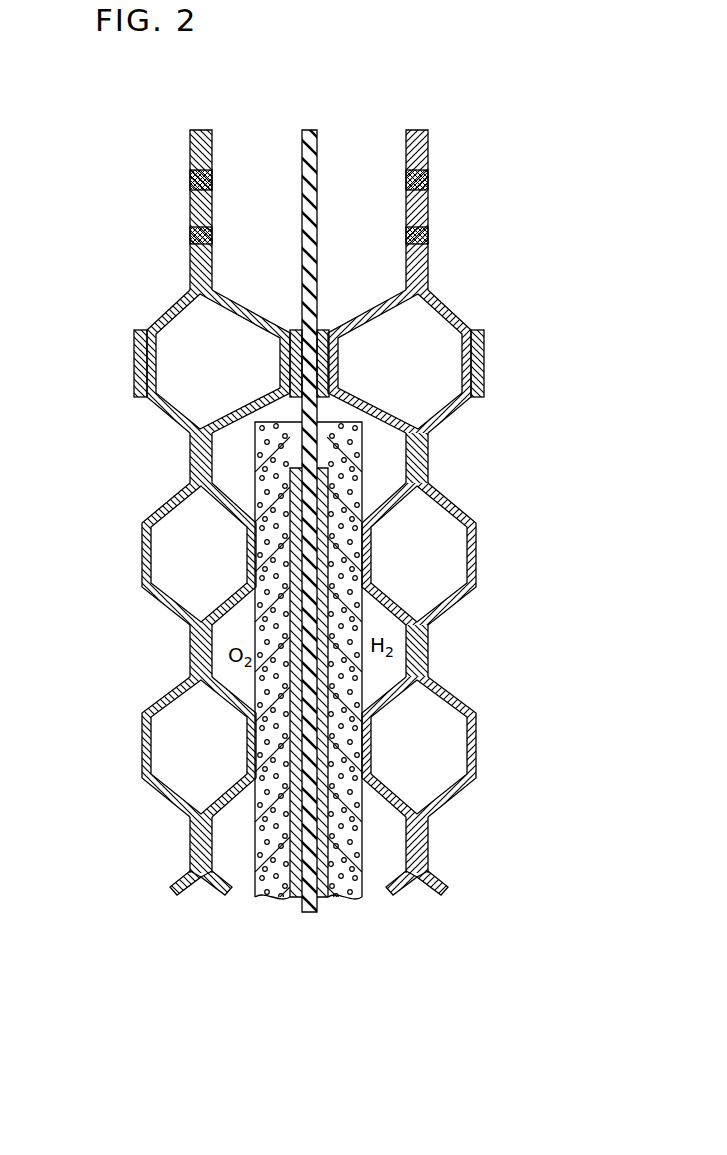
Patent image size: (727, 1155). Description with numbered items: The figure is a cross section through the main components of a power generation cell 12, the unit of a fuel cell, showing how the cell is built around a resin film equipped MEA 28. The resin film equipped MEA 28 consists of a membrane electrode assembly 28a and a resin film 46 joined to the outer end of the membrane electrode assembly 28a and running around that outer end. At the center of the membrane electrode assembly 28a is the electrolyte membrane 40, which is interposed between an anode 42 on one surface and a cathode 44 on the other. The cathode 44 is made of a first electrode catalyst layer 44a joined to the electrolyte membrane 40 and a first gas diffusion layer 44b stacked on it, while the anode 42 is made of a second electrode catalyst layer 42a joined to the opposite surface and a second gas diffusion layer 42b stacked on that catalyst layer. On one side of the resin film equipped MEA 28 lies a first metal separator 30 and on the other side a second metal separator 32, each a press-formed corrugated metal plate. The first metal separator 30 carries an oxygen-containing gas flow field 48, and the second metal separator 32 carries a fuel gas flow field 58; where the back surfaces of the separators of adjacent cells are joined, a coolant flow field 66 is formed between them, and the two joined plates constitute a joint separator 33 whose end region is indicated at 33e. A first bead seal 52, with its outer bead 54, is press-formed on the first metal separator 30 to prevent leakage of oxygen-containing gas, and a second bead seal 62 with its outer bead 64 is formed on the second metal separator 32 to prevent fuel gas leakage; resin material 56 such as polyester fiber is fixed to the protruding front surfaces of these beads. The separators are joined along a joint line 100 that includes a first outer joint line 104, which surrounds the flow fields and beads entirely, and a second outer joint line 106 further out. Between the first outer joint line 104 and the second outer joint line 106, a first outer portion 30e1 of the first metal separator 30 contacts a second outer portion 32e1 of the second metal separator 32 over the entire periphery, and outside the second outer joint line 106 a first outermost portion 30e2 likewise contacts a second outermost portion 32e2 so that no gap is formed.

The power generation cell 12 is at (535, 703).
The resin film equipped MEA 28 is at (308, 522).
The membrane electrode assembly 28a is at (365, 970).
The first metal separator 30 is at (238, 320).
The second metal separator 32 is at (186, 258).
The joint separator 33 is at (308, 197).
The separator end portion 33e is at (201, 130).
The first outer portion 30e1 is at (206, 205).
The first outermost portion 30e2 is at (206, 152).
The second outer portion 32e1 is at (190, 206).
The second outermost portion 32e2 is at (190, 144).
The electrolyte membrane 40 is at (333, 526).
The anode 42 is at (385, 696).
The second electrode catalyst layer 42a is at (322, 491).
The second gas diffusion layer 42b is at (350, 548).
The cathode 44 is at (191, 696).
The first electrode catalyst layer 44a is at (297, 547).
The first gas diffusion layer 44b is at (267, 527).
The resin film 46 is at (309, 130).
The oxygen-containing gas flow field 48 is at (222, 637).
The first bead seal 52 is at (240, 288).
The outer bead 54 is at (258, 320).
The resin material 56 is at (134, 368).
The fuel gas flow field 58 is at (393, 668).
The second bead seal 62 is at (379, 288).
The outer bead 64 is at (358, 320).
The coolant flow field 66 is at (180, 583).
The joint line 100 is at (186, 241).
The first outer joint line 104 is at (186, 237).
The second outer joint line 106 is at (190, 180).